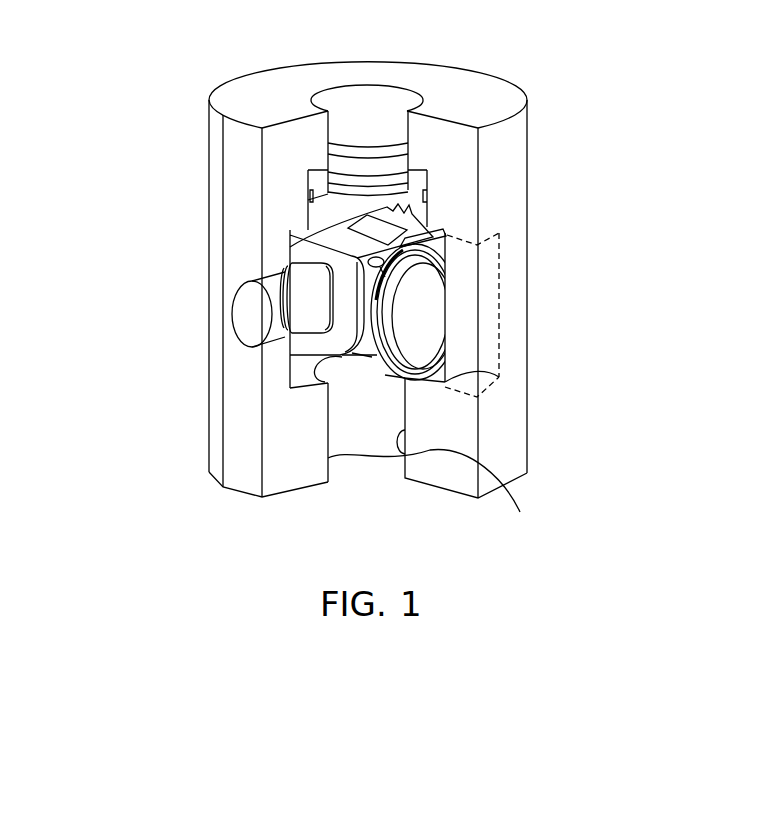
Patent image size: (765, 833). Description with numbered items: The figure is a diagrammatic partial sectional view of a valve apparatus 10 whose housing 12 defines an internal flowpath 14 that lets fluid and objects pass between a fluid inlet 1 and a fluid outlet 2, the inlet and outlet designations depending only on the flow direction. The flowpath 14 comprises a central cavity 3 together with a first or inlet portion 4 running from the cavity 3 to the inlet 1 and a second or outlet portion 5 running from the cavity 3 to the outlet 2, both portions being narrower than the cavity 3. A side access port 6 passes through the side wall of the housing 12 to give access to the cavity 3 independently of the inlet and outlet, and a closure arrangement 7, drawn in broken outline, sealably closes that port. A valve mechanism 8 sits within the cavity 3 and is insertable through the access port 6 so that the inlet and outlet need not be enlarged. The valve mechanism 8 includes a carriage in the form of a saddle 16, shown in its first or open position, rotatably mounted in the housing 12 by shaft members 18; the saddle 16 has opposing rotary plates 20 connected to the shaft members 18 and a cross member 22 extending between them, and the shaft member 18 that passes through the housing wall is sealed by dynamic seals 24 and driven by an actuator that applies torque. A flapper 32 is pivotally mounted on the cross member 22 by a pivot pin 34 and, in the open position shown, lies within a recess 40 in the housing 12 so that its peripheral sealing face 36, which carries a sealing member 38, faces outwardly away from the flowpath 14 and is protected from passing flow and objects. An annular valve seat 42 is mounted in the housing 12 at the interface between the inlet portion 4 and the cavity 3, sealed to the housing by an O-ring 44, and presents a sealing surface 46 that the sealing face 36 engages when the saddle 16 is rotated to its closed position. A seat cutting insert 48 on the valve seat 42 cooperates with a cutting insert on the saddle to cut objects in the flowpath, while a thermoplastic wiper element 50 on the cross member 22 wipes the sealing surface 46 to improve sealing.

The apparatus 10 is at (146, 94).
The housing 12 is at (247, 70).
The internal flowpath 14 is at (335, 98).
The fluid inlet 1 is at (367, 86).
The first or inlet portion 4 is at (408, 110).
The valve seat 42 is at (418, 180).
The O-ring 44 is at (430, 207).
The sealing surface 46 is at (430, 233).
The cross member 22 is at (430, 213).
The side access port 6 is at (462, 243).
The closure arrangement 7 is at (490, 270).
The flapper 32 is at (432, 298).
The pivot pin 34 is at (395, 338).
The recess 40 is at (447, 377).
The seat cutting insert 48 is at (308, 183).
The wiper element 50 is at (308, 214).
The saddle 16 is at (290, 232).
The dynamic seals 24 is at (296, 263).
The shaft member 18 is at (247, 318).
The cavity 3 is at (290, 358).
The rotary plate 20 is at (290, 384).
The valve mechanism 8 is at (342, 357).
The peripheral sealing face 36 is at (370, 355).
The sealing member 38 is at (407, 375).
The fluid outlet 2 is at (398, 458).
The second or outlet portion 5 is at (430, 494).